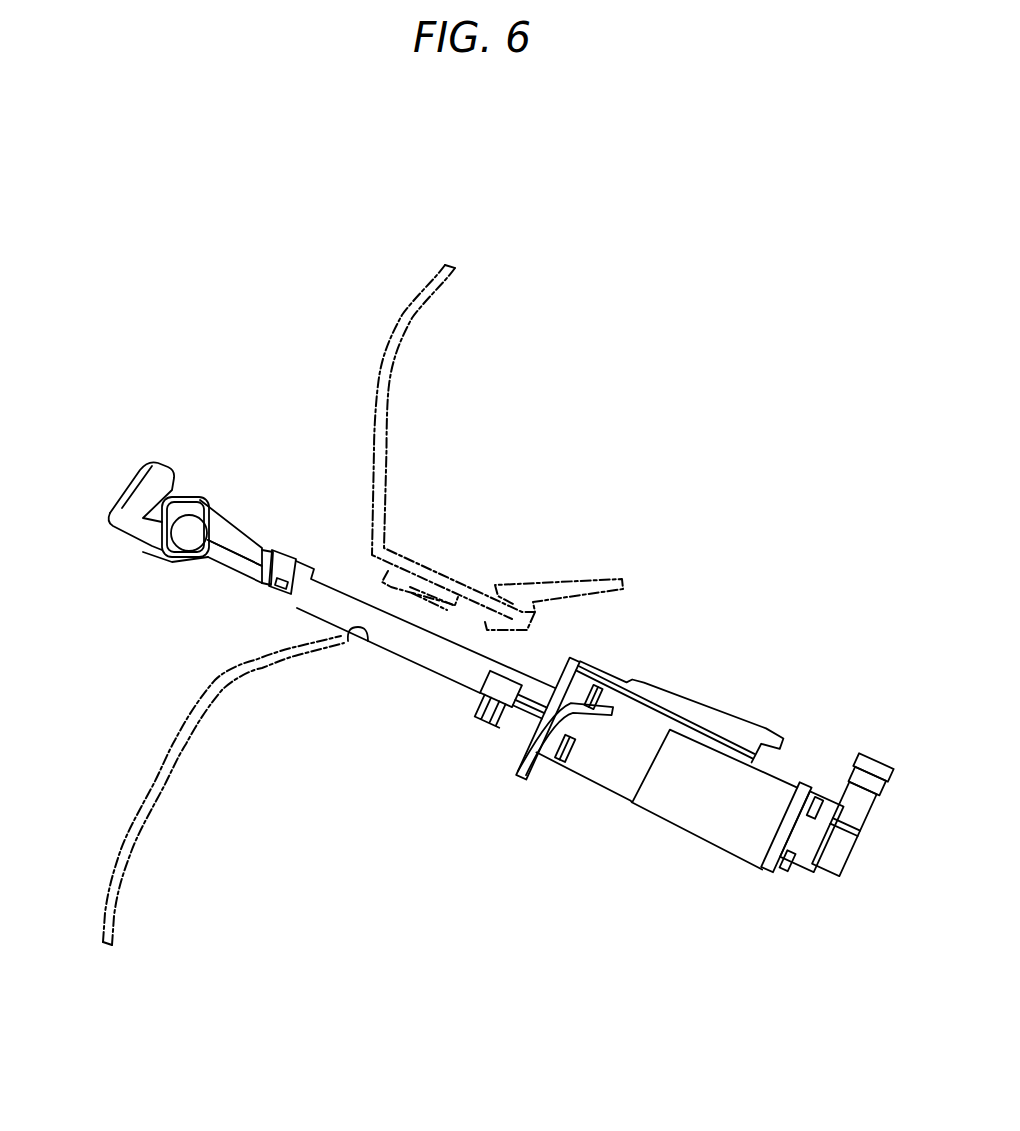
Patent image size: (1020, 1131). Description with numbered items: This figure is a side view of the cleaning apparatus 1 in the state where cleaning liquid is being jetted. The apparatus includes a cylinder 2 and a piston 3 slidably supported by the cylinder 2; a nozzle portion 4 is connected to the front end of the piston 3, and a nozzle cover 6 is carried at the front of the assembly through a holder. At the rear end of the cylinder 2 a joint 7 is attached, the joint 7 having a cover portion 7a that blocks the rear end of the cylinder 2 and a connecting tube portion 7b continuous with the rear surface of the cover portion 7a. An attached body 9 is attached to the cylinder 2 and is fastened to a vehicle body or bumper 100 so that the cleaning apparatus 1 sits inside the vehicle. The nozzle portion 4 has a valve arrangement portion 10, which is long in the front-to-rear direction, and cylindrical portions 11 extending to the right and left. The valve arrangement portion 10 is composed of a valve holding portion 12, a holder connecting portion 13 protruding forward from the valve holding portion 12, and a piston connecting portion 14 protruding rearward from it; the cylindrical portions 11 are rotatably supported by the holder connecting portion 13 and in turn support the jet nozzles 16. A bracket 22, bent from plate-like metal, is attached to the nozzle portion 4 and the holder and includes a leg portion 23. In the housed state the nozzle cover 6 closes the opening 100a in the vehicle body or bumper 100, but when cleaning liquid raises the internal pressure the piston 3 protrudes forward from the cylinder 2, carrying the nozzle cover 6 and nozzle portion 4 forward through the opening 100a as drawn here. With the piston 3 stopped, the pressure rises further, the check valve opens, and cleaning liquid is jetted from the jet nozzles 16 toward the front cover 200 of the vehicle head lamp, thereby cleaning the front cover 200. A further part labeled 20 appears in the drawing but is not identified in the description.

The cleaning apparatus 1 is at (781, 651).
The cylinder 2 is at (678, 805).
The piston 3 is at (415, 652).
The nozzle portion 4 is at (226, 570).
The nozzle cover 6 is at (165, 468).
The joint 7 is at (797, 873).
The cover portion 7a is at (810, 868).
The connecting tube portion 7b is at (857, 773).
The attached body 9 is at (692, 703).
The valve arrangement portion 10 is at (242, 568).
The cylindrical portions 11 is at (178, 547).
The valve holding portion 12 is at (240, 537).
The holder connecting portion 13 is at (158, 550).
The piston connecting portion 14 is at (290, 565).
The jet nozzles 16 is at (189, 516).
The head 20 is at (140, 500).
The bracket 22 is at (200, 500).
The leg portion 23 is at (207, 560).
The vehicle body or bumper 100 is at (172, 747).
The opening 100a is at (368, 638).
The front cover 200 is at (403, 313).